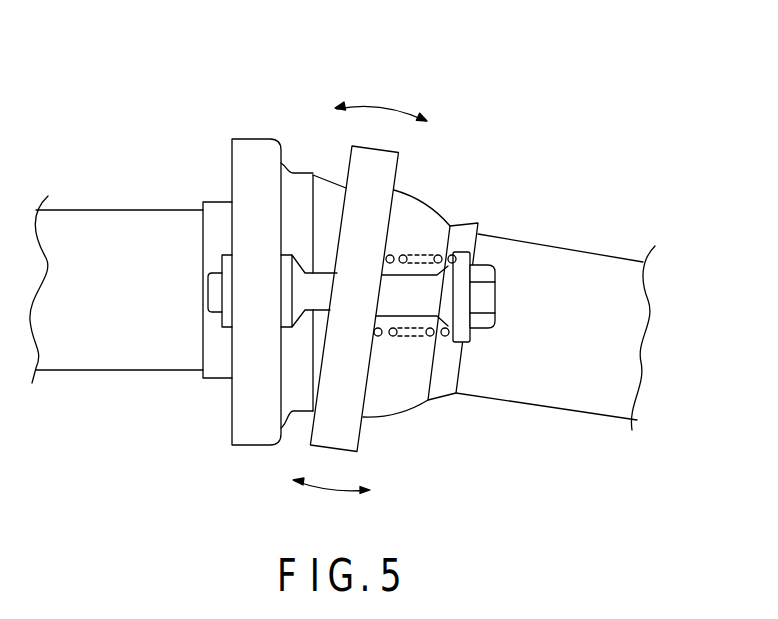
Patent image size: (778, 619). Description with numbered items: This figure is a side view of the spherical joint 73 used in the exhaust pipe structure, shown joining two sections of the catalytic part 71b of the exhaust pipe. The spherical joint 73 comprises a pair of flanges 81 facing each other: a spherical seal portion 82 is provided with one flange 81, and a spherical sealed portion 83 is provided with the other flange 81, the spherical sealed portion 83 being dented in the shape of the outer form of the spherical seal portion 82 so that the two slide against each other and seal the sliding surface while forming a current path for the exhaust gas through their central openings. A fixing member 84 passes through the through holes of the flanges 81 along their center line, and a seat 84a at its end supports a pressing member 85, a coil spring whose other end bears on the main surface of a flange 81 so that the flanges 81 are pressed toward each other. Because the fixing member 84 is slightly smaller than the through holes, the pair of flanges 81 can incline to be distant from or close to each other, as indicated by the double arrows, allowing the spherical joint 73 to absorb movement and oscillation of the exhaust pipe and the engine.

The catalytic part 71b is at (117, 210).
The spherical joint 73 is at (281, 99).
The flange 81 is at (246, 138).
The spherical seal portion 82 is at (299, 173).
The spherical sealed portion 83 is at (428, 198).
The fixing member 84 is at (496, 300).
The seat 84a is at (462, 252).
The pressing member 85 is at (405, 340).